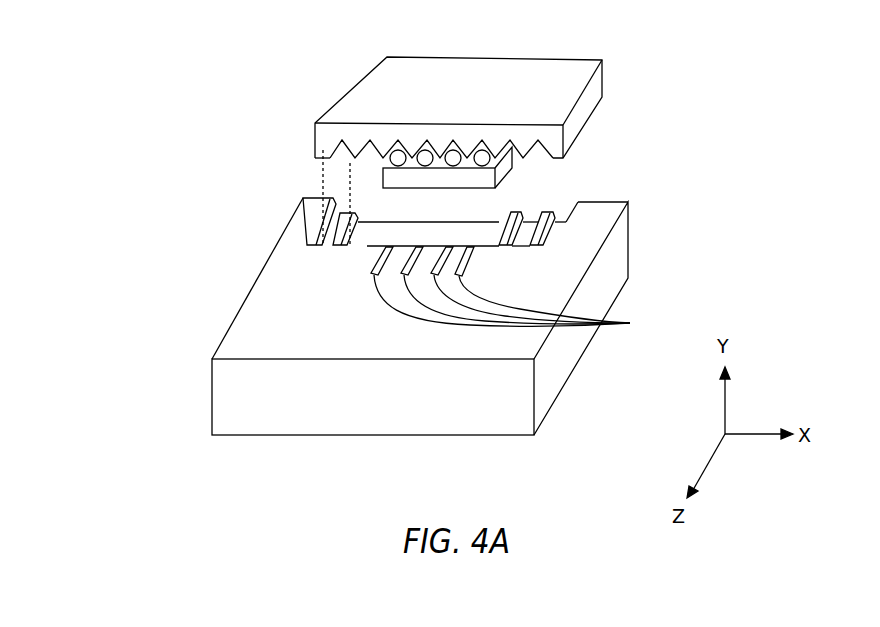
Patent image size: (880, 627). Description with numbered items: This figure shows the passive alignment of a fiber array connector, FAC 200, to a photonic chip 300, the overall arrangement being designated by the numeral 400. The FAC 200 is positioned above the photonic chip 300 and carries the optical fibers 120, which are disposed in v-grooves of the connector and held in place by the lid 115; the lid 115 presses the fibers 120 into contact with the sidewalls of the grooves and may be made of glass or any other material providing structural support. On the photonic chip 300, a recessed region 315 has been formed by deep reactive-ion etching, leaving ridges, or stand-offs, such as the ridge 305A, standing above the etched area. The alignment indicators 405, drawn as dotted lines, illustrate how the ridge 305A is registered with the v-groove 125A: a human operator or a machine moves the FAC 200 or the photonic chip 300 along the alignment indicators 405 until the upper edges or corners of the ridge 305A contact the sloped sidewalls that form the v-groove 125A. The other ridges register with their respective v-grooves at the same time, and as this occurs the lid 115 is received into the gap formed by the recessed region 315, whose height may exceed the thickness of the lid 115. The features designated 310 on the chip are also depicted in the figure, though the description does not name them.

The FAC 200 is at (427, 47).
The fibers 120 is at (425, 150).
The lid 115 is at (512, 163).
The alignment assembly 400 is at (670, 194).
The v-groove 125A is at (322, 150).
The alignment indicators 405 is at (350, 192).
The recessed region 315 is at (448, 210).
The ridge 305A is at (328, 247).
The optical traces / waveguides 310 is at (630, 323).
The photonic chip 300 is at (208, 382).